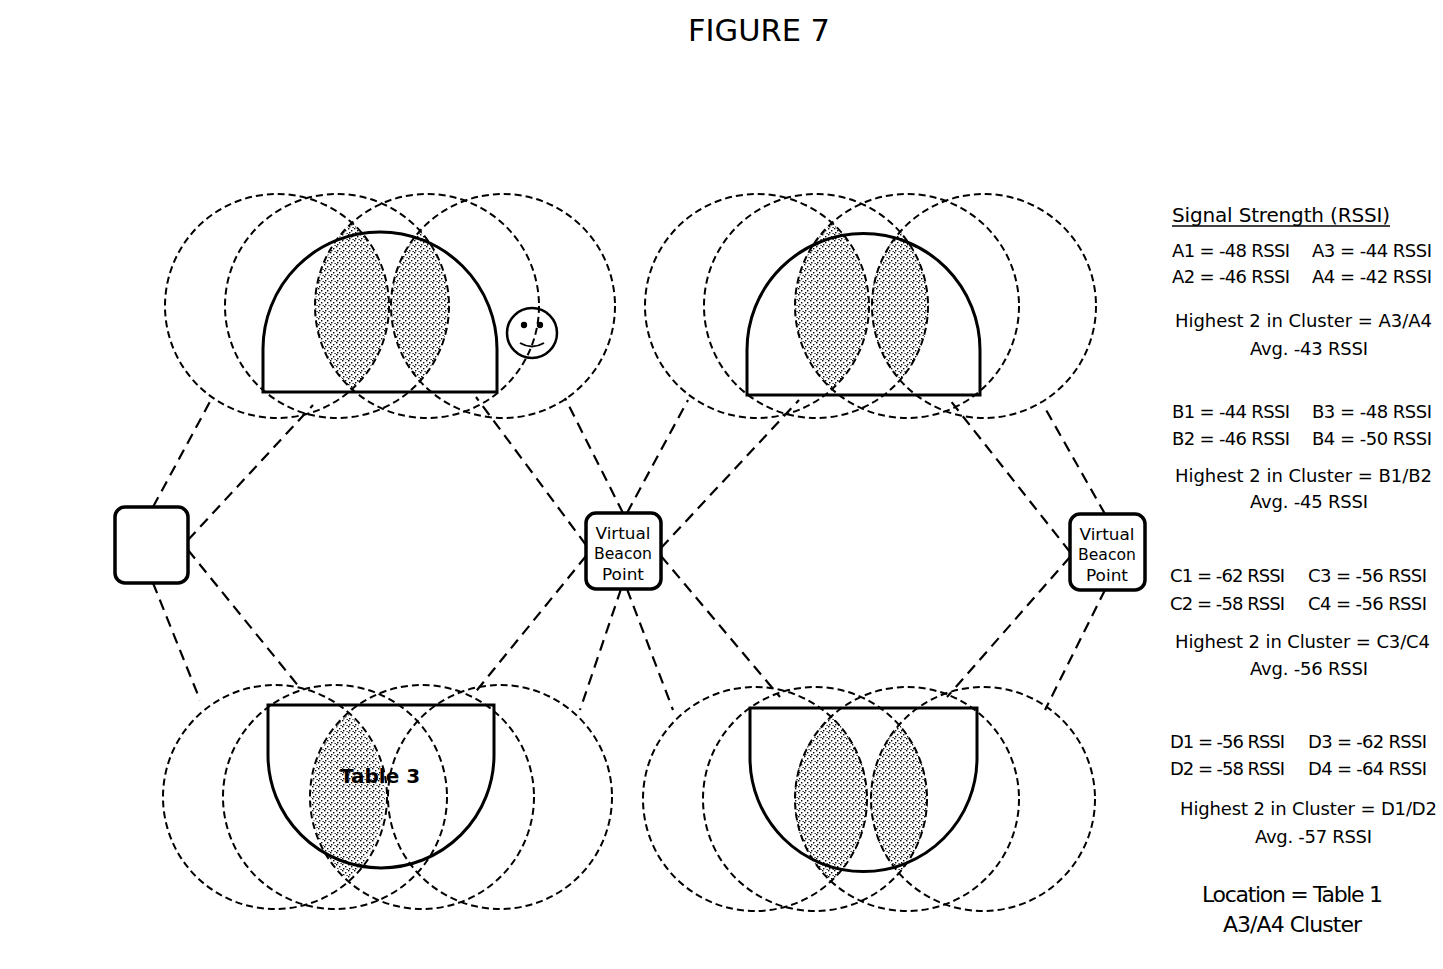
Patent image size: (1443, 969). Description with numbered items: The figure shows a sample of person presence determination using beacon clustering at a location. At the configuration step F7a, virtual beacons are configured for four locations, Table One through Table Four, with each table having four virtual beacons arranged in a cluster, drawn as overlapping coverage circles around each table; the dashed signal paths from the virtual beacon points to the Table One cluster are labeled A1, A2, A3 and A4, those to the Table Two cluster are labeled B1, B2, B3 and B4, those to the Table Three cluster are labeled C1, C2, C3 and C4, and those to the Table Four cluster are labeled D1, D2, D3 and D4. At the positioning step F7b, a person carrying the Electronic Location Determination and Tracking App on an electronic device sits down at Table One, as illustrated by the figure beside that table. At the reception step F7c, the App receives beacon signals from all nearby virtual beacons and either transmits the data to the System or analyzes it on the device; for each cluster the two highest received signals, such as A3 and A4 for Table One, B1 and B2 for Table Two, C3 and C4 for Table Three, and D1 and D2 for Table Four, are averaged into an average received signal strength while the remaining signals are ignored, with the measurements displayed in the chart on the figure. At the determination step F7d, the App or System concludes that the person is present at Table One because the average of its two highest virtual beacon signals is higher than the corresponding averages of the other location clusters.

The signal strength measurement A1 from left virtual beacon point to table 1 cluster A1 is at (181, 452).
The signal strength measurement A2 is at (250, 472).
The signal strength measurement A3 is at (531, 471).
The signal strength measurement A4 is at (594, 455).
The signal strength measurement B1 is at (657, 456).
The signal strength measurement B2 is at (730, 474).
The signal strength measurement B3 is at (1010, 476).
The signal strength measurement B4 is at (1075, 461).
The signal strength measurement C1 is at (172, 641).
The signal strength measurement C2 is at (244, 619).
The signal strength measurement C3 is at (529, 625).
The signal strength measurement C4 is at (601, 649).
The signal strength measurement D1 is at (650, 649).
The signal strength measurement D2 is at (720, 626).
The signal strength measurement D3 is at (1008, 627).
The signal strength measurement D4 is at (1077, 650).
The virtual beacon configuration step F7a is at (195, 545).
The person positioning step F7b is at (390, 306).
The signal reception and averaging step F7c is at (893, 306).
The presence determination step F7d is at (894, 799).